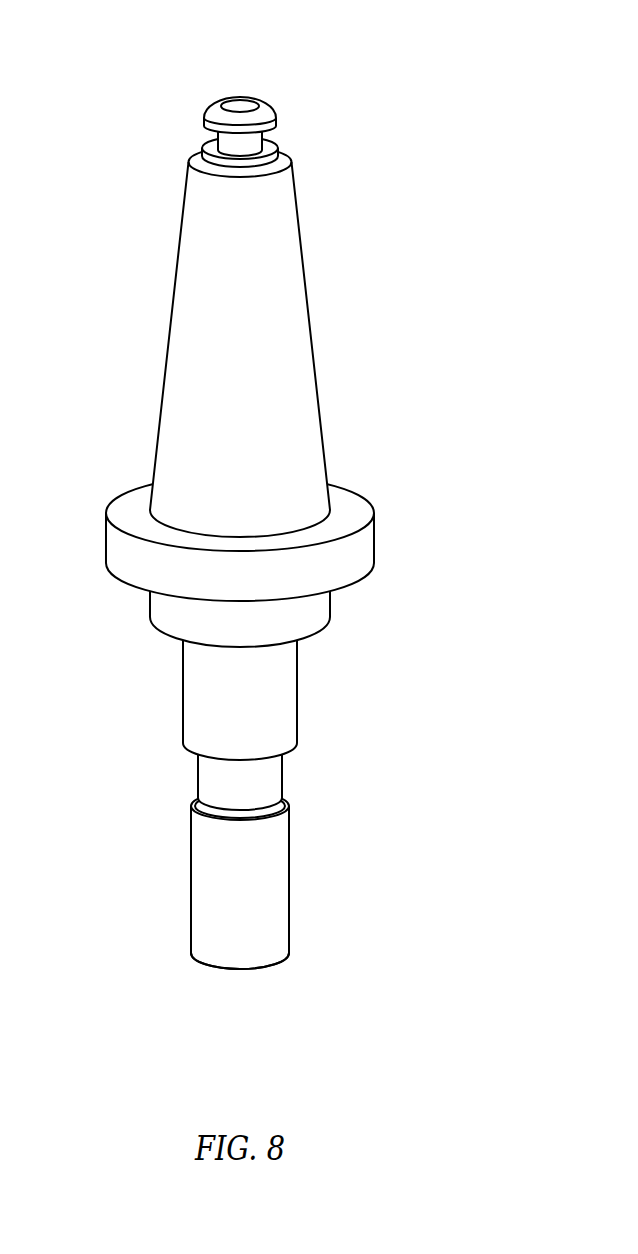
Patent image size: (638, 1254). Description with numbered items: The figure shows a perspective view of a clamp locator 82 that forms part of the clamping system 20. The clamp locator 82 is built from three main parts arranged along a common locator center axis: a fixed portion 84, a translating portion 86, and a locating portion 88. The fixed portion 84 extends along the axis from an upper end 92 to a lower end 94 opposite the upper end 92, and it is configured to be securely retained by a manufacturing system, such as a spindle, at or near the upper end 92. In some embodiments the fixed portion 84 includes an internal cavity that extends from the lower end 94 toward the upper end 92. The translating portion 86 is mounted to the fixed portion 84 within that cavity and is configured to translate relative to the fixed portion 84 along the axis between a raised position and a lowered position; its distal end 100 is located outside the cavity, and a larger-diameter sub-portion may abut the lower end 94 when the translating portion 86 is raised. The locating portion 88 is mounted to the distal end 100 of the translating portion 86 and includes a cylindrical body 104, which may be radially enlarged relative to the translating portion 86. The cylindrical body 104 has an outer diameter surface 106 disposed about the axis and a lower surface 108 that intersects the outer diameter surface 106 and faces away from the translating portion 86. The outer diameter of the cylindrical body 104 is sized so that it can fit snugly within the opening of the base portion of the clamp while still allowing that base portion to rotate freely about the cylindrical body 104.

The clamping system 20 is at (99, 133).
The clamp locator 82 is at (386, 277).
The fixed portion 84 is at (300, 235).
The upper end 92 is at (250, 92).
The lower end 94 is at (173, 762).
The translating portion 86 is at (283, 771).
The distal end 100 is at (288, 793).
The locating portion 88 is at (290, 870).
The cylindrical body 104 is at (213, 876).
The outer diameter surface 106 is at (290, 917).
The lower surface 108 is at (237, 971).